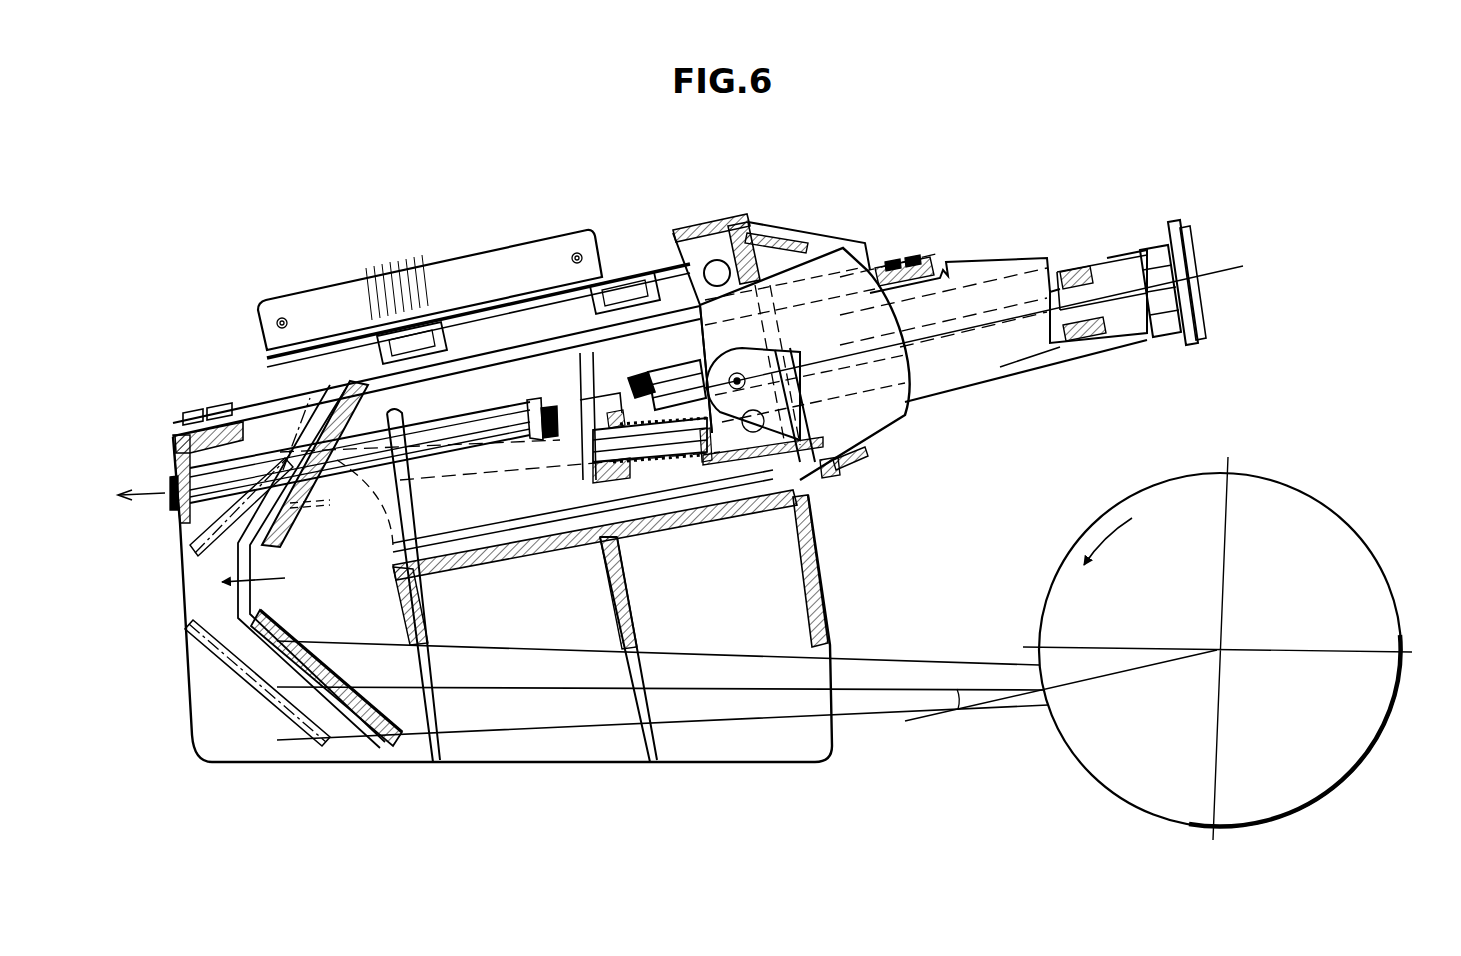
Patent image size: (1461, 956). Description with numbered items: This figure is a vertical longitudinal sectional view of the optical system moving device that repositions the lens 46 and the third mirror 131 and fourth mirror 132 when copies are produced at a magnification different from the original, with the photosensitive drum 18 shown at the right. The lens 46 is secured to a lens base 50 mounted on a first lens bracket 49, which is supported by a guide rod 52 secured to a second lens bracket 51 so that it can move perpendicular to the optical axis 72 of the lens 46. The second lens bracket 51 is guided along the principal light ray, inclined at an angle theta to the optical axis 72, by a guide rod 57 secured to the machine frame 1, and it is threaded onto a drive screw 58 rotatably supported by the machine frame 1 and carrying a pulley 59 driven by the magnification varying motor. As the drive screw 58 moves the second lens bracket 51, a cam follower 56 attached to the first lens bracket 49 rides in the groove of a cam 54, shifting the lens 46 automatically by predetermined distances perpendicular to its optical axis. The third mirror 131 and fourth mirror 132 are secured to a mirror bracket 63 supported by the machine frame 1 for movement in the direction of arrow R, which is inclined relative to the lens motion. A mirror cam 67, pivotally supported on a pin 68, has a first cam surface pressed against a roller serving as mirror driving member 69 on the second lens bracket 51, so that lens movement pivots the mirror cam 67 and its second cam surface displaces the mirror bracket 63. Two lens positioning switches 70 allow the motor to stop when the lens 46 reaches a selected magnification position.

The machine frame 1 is at (1135, 345).
The photosensitive drum 18 is at (1082, 743).
The lens 46 is at (902, 420).
The first lens bracket 49 is at (720, 250).
The lens base 50 is at (845, 463).
The second lens bracket 51 is at (776, 240).
The guide rod 52 is at (721, 258).
The cam 54 is at (560, 522).
The cam follower 56 is at (813, 493).
The guide rod 57 is at (674, 382).
The drive screw 58 is at (645, 384).
The pulley 59 is at (1195, 313).
The mirror bracket 63 is at (326, 700).
The mirror cam 67 is at (537, 352).
The pin 68 is at (200, 411).
The mirror driving member 69 is at (912, 263).
The lens positioning switches 70 is at (410, 330).
The optical axis 72 is at (850, 340).
The third mirror 131 is at (292, 527).
The fourth mirror 132 is at (283, 623).